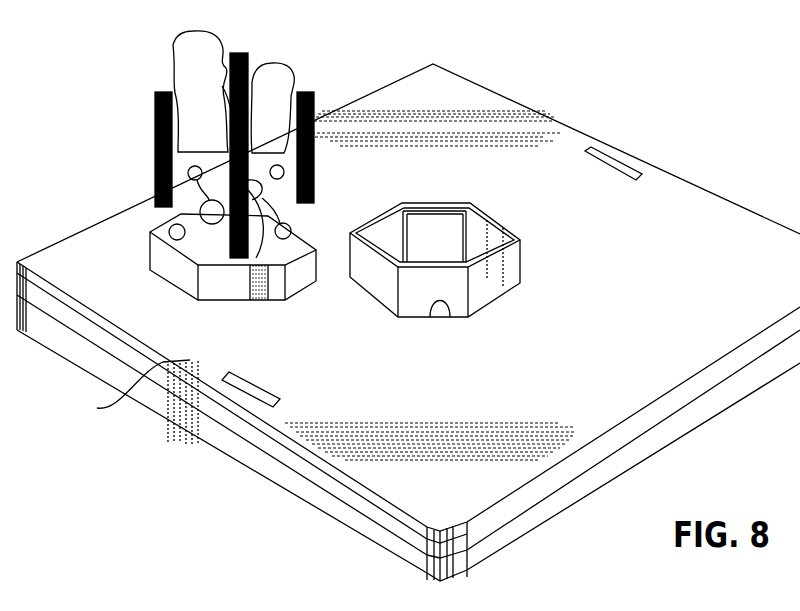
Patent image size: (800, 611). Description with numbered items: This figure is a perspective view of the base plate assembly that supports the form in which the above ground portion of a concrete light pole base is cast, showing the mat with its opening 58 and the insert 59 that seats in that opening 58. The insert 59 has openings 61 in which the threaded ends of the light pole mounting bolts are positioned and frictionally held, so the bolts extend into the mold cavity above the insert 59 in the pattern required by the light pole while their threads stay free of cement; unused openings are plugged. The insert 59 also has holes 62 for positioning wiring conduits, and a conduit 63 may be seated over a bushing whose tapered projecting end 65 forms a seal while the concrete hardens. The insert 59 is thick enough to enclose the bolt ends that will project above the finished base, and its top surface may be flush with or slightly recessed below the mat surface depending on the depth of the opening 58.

The opening 58 is at (450, 317).
The insert 59 is at (216, 303).
The openings 61 is at (196, 166).
The holes 62 is at (158, 458).
The conduit 63 is at (231, 71).
The tapered projecting end 65 is at (278, 268).